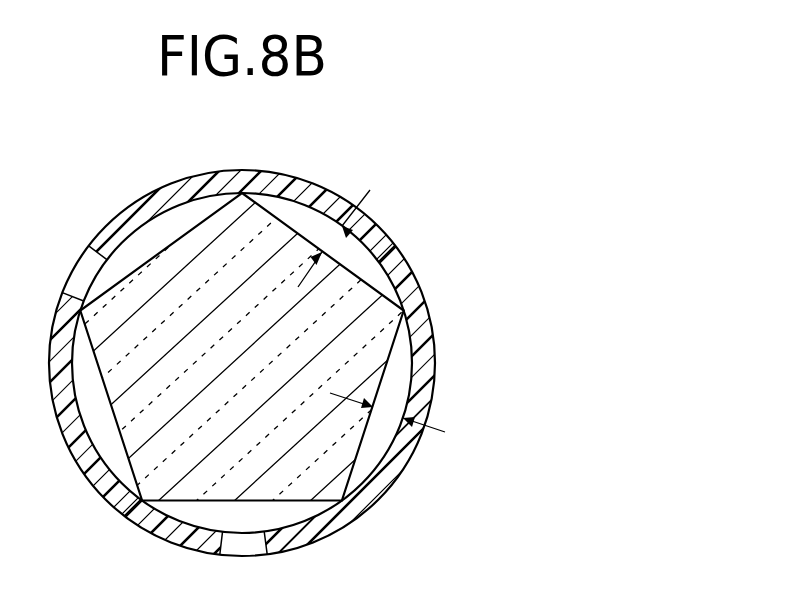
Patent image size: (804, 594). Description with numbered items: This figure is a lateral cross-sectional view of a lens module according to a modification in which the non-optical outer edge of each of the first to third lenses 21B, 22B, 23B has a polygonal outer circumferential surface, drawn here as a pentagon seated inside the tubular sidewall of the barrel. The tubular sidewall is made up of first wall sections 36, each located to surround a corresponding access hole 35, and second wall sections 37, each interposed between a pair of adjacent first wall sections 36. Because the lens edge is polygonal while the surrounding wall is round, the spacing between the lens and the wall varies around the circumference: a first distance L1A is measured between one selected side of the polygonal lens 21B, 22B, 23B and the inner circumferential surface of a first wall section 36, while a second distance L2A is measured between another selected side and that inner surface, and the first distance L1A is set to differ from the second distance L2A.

The access hole 35 is at (400, 252).
The first wall section 36 is at (396, 258).
The second wall section 37 is at (408, 463).
The first lens 21B is at (346, 335).
The second lens 22B is at (410, 352).
The third lens 23B is at (410, 352).
The first distance L1A is at (334, 238).
The second distance L2A is at (392, 412).